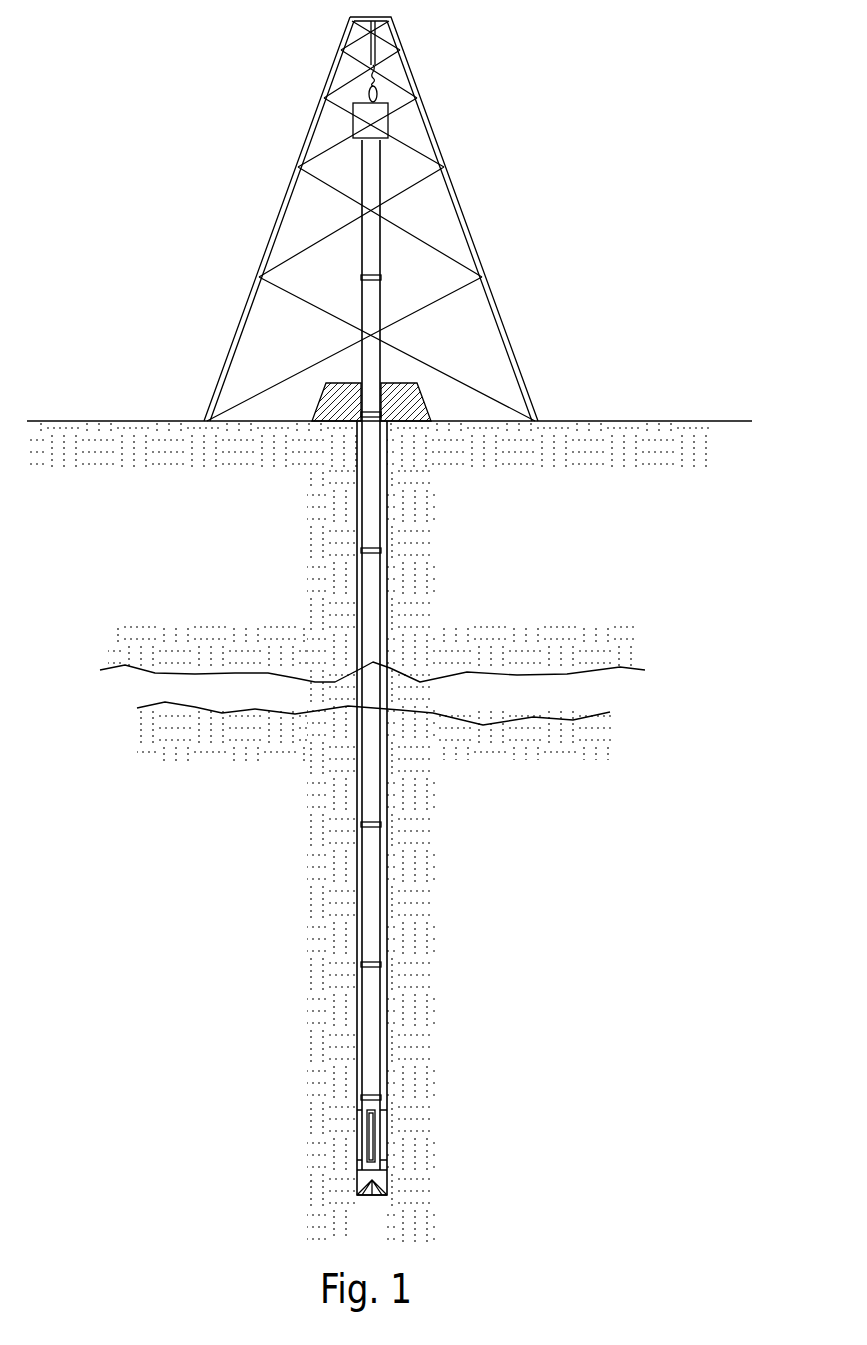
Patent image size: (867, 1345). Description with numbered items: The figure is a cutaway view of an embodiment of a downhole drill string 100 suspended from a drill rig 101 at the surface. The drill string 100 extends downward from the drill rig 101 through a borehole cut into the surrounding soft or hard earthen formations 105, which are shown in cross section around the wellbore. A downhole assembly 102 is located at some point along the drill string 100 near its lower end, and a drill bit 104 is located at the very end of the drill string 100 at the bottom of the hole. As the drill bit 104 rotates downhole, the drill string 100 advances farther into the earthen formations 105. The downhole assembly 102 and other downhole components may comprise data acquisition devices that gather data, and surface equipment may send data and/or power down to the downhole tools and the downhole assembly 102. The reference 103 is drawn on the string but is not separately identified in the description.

The downhole drill string 100 is at (389, 631).
The drill rig 101 is at (412, 67).
The downhole assembly 102 is at (343, 1145).
The drill string 103 is at (355, 810).
The drill bit 104 is at (440, 1206).
The earthen formations 105 is at (498, 647).